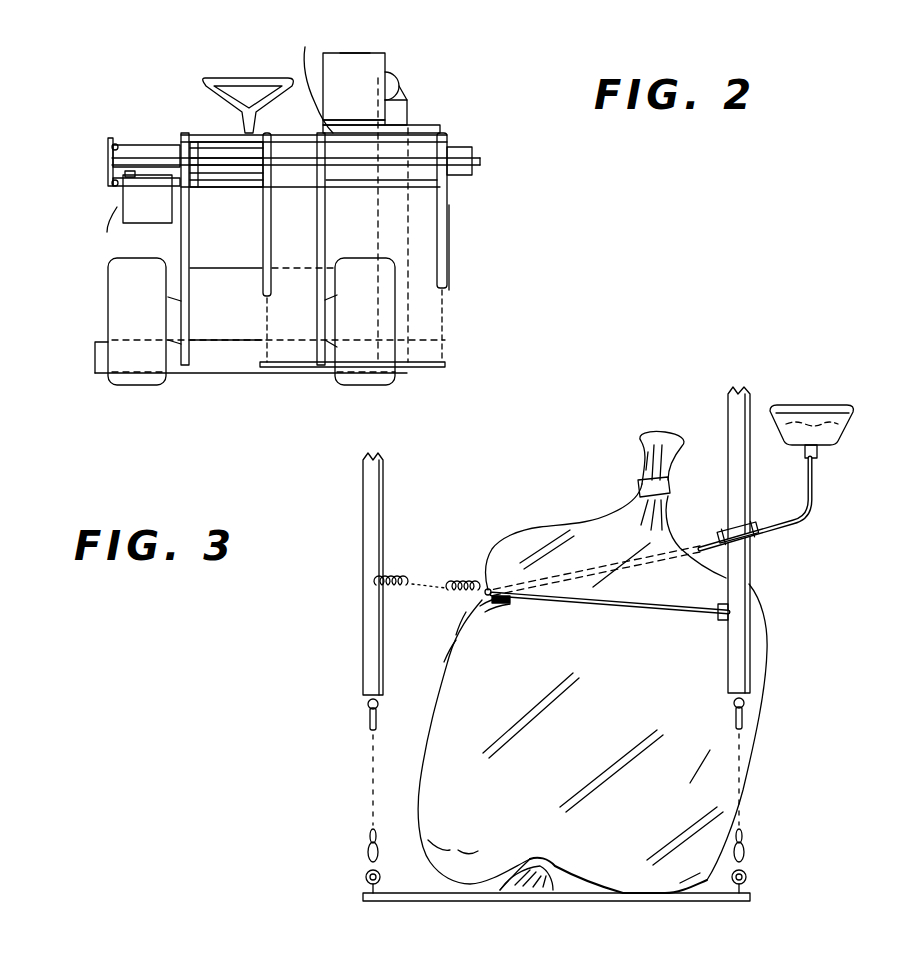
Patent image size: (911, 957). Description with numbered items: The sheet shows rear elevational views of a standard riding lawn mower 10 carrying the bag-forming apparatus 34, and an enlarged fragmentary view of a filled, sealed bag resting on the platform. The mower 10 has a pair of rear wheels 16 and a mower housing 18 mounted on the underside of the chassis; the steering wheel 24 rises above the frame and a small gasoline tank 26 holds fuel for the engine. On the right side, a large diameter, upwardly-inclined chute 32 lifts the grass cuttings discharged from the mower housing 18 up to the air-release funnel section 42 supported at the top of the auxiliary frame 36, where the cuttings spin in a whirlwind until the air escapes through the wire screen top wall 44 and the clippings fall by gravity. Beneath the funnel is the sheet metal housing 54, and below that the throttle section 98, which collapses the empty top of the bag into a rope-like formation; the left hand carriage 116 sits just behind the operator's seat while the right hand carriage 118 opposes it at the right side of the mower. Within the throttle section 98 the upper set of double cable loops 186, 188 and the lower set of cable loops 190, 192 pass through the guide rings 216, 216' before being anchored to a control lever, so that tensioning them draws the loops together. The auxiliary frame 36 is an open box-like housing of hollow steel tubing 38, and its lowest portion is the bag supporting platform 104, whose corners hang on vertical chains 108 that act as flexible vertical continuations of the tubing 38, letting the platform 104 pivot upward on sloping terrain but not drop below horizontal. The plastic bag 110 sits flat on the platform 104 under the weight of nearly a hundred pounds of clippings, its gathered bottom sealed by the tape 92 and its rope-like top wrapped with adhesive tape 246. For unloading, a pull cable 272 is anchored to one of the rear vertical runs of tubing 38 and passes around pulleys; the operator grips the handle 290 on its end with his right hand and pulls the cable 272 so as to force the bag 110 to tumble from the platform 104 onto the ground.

In FIG. 2, the riding lawn mower 10 is at (208, 82).
In FIG. 2, the rear wheels 16 is at (133, 389).
In FIG. 2, the mower housing 18 is at (107, 355).
In FIG. 2, the steering wheel 24 is at (245, 83).
In FIG. 2, the gasoline tank 26 is at (148, 215).
In FIG. 2, the chute 32 is at (411, 95).
In FIG. 2, the bag-forming apparatus 34 is at (457, 260).
In FIG. 2, the auxiliary frame 36 is at (457, 231).
In FIG. 2, the hollow steel tubing 38 is at (197, 226).
In FIG. 3, the hollow steel tubing 38 is at (370, 645).
In FIG. 2, the air-release funnel section 42 is at (363, 86).
In FIG. 2, the top wall 44 is at (357, 60).
In FIG. 2, the sheet metal housing 54 is at (309, 74).
In FIG. 3, the tape 92 is at (561, 880).
In FIG. 2, the throttle section 98 is at (404, 182).
In FIG. 2, the bag supporting platform 104 is at (277, 373).
In FIG. 3, the bag supporting platform 104 is at (419, 889).
In FIG. 2, the vertical chains 108 is at (453, 321).
In FIG. 3, the vertical chains 108 is at (372, 759).
In FIG. 3, the plastic bag 110 is at (548, 654).
In FIG. 2, the left hand carriage 116 is at (210, 157).
In FIG. 2, the right hand carriage 118 is at (467, 154).
In FIG. 2, the upper cable loop 186 is at (134, 152).
In FIG. 2, the lower cable loop of the upper set 188 is at (154, 152).
In FIG. 2, the upper cable loop of the lower set 190 is at (128, 203).
In FIG. 2, the lower cable loop of the lower set 192 is at (125, 211).
In FIG. 2, the guide ring 216 is at (69, 152).
In FIG. 2, the guide ring 216' is at (70, 192).
In FIG. 3, the adhesive tape 246 is at (647, 493).
In FIG. 3, the pull cable 272 is at (669, 618).
In FIG. 3, the handle 290 is at (813, 405).